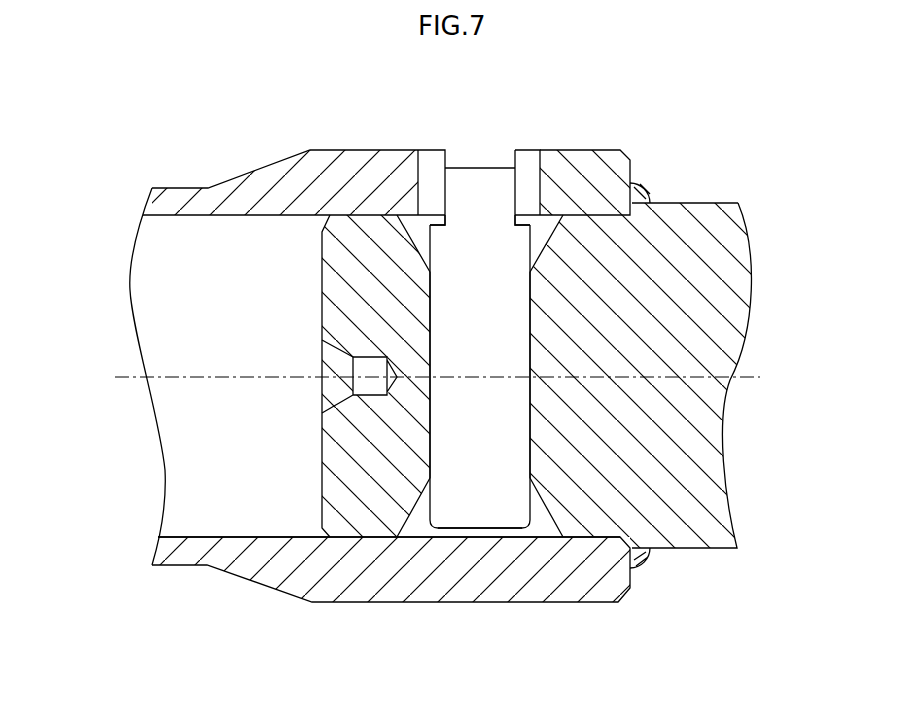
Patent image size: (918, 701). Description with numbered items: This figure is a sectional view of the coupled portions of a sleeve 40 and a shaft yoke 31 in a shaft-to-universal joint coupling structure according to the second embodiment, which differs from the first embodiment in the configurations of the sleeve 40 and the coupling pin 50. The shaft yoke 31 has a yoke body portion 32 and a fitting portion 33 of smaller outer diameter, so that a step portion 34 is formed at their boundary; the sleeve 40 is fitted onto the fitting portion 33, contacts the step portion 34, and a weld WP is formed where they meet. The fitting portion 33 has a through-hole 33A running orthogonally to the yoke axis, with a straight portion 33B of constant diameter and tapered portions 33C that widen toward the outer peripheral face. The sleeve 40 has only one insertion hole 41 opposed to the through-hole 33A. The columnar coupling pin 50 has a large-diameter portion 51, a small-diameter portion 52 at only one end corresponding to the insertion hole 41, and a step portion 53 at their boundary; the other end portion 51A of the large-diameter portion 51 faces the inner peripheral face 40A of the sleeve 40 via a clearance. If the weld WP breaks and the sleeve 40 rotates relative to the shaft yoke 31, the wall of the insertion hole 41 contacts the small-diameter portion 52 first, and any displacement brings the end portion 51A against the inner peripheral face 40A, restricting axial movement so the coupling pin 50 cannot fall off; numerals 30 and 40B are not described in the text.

The workpiece body 30 is at (730, 562).
The shaft yoke 31 is at (672, 114).
The yoke body portion 32 is at (672, 203).
The fitting portion 33 is at (446, 325).
The through-hole 33A is at (433, 428).
The straight portion 33B is at (432, 337).
The tapered portions 33C is at (424, 260).
The step portion 34 is at (623, 212).
The sleeve 40 is at (301, 149).
The inner peripheral face 40A is at (378, 537).
The lower plate 40B is at (391, 581).
The insertion hole 41 is at (425, 158).
The coupling pin 50 is at (500, 376).
The large-diameter portion 51 is at (513, 347).
The end portion of the large-diameter portion 51A is at (480, 530).
The small-diameter portion 52 is at (498, 177).
The step portion 53 is at (512, 227).
The weld WP is at (645, 562).